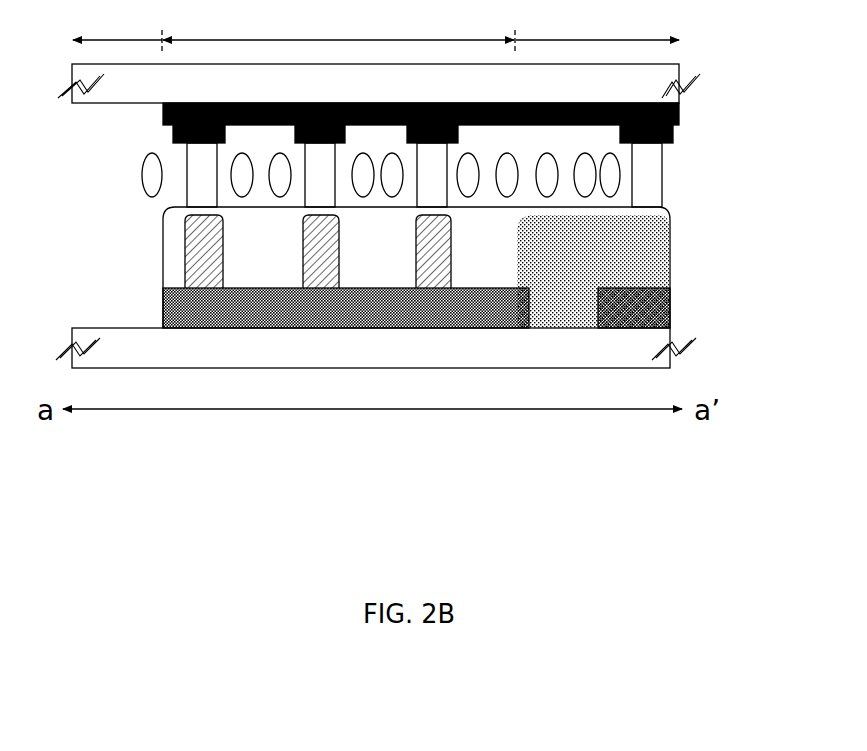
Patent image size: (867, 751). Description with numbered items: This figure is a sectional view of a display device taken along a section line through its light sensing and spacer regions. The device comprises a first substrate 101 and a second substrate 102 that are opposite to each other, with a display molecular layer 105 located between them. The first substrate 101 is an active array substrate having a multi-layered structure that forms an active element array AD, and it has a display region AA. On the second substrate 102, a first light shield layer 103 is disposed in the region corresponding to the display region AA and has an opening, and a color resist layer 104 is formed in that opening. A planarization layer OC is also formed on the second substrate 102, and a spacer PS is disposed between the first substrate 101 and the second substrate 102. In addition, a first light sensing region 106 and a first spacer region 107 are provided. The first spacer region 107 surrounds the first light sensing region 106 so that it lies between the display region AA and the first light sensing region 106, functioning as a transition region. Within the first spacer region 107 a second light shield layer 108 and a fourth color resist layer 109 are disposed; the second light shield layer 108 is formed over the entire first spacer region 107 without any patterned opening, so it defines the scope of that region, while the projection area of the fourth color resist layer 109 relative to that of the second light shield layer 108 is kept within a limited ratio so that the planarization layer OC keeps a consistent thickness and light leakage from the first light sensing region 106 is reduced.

The first substrate 101 is at (379, 83).
The second substrate 102 is at (376, 348).
The first light shield layer 103 is at (651, 310).
The color resist layer 104 is at (655, 264).
The display molecular layer 105 is at (138, 180).
The first light sensing region 106 is at (117, 30).
The first spacer region 107 is at (339, 29).
The second light shield layer 108 is at (185, 308).
The fourth color resist layer 109 is at (186, 256).
The display region AA is at (597, 25).
The active element array AD is at (682, 118).
The spacer PS is at (665, 164).
The planarization layer OC is at (673, 222).